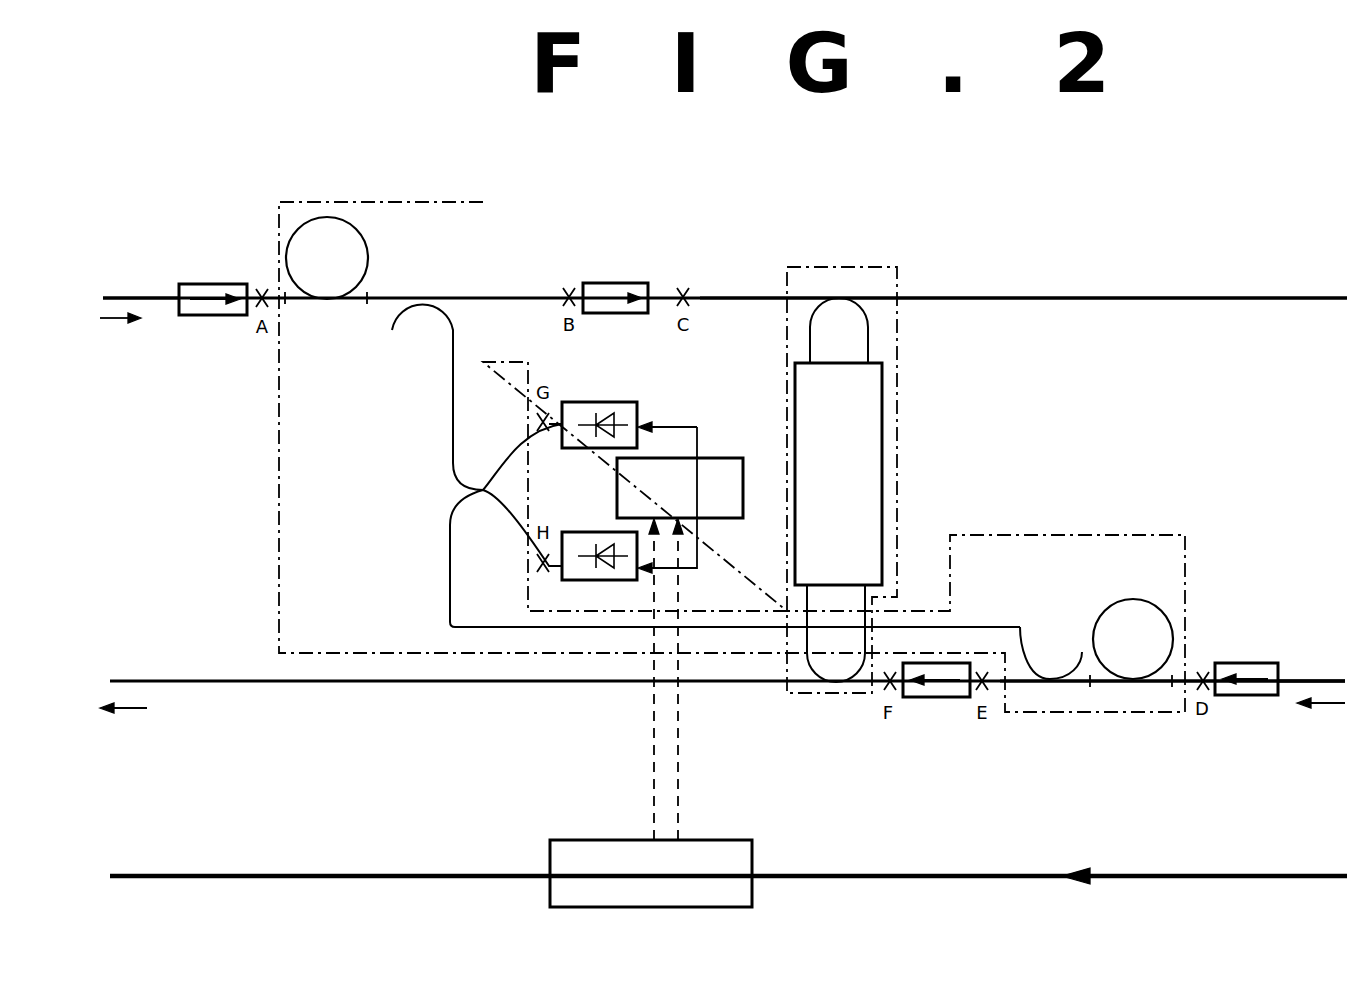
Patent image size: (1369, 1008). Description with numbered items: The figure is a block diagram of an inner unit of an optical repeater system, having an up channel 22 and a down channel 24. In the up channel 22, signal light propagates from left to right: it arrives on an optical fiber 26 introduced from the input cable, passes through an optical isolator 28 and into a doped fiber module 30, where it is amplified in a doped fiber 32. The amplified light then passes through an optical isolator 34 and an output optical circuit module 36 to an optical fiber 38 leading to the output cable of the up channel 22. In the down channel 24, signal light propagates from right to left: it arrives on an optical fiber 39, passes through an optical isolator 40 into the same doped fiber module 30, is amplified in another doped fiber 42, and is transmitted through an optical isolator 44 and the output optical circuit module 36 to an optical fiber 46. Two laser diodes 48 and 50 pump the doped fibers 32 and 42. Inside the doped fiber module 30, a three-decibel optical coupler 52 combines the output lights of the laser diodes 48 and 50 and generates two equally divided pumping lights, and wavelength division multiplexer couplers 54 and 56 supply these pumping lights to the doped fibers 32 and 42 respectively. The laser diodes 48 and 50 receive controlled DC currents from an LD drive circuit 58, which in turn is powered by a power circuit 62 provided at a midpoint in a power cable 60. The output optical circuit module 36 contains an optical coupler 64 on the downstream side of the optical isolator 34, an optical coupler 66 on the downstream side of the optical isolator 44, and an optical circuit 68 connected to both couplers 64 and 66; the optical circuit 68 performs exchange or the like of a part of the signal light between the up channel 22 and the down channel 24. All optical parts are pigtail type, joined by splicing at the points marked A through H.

The up channel 22 is at (140, 264).
The down channel 24 is at (1314, 658).
The optical fiber 26 is at (158, 303).
The optical isolator 28 is at (212, 284).
The doped fiber module 30 is at (450, 201).
The doped fiber 32 is at (368, 256).
The optical isolator 34 is at (616, 283).
The output optical circuit module 36 is at (870, 266).
The optical fiber 38 is at (1072, 294).
The optical fiber 39 is at (1290, 685).
The optical isolator 40 is at (1248, 663).
The doped fiber 42 is at (1133, 599).
The optical isolator 44 is at (941, 700).
The optical fiber 46 is at (411, 686).
The laser diode 48 is at (625, 402).
The laser diode 50 is at (585, 532).
The 3-dB optical coupler 52 is at (490, 478).
The wavelength division multiplexer coupler 54 is at (424, 292).
The wavelength division multiplexer coupler 56 is at (1053, 666).
The LD drive circuit 58 is at (743, 458).
The power cable 60 is at (917, 872).
The power circuit 62 is at (727, 840).
The optical coupler 64 is at (837, 285).
The optical coupler 66 is at (834, 697).
The optical circuit 68 is at (882, 433).